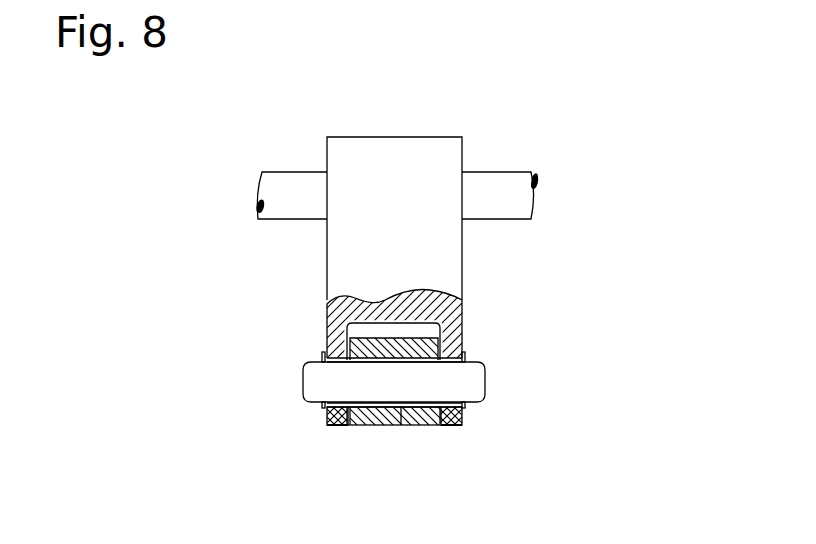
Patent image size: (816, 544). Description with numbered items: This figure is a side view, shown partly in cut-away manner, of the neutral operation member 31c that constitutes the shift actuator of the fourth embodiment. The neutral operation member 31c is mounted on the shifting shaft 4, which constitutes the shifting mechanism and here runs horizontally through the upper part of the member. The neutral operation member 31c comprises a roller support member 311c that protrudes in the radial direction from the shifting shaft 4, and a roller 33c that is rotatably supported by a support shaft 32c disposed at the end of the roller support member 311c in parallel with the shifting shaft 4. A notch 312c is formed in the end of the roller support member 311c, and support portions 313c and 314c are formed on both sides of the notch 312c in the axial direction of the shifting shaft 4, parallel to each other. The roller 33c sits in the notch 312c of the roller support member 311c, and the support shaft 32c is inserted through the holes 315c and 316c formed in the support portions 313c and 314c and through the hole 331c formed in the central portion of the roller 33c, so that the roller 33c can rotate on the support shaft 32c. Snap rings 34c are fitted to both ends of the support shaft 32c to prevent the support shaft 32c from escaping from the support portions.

The shifting shaft 4 is at (288, 181).
The neutral operation member 31c is at (427, 124).
The roller support member 311c is at (447, 253).
The notch 312c is at (419, 330).
The support shaft 32c is at (318, 380).
The roller 33c is at (360, 427).
The hole 331c is at (400, 427).
The snap ring 34c is at (323, 355).
The support portion 313c is at (453, 427).
The support portion 314c is at (338, 427).
The hole 315c is at (465, 418).
The hole 316c is at (327, 423).